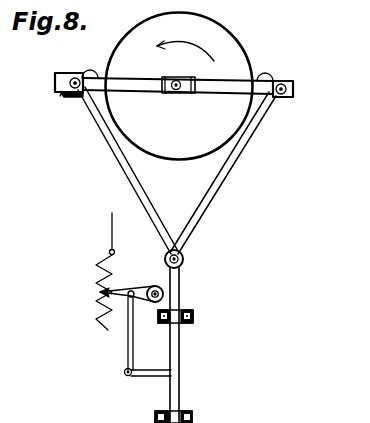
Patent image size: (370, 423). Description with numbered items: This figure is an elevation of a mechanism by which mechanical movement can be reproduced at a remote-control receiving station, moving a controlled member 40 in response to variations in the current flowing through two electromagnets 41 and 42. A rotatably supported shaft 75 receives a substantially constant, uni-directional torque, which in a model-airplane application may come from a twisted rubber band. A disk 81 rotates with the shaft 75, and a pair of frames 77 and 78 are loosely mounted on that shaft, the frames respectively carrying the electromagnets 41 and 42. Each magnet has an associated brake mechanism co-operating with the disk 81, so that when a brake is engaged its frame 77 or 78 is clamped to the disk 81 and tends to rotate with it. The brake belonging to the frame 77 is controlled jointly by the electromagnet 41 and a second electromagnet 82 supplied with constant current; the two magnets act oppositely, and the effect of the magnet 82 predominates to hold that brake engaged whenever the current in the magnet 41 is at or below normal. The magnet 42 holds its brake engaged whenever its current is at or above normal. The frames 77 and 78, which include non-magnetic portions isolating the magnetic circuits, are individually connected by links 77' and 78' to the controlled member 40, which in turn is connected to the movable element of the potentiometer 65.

The controlled member 40 is at (181, 297).
The electromagnet 41 is at (90, 69).
The electromagnet 42 is at (270, 77).
The potentiometer 65 is at (94, 305).
The shaft 75 is at (177, 93).
The frame 77 is at (45, 106).
The link 77' is at (128, 170).
The frame 78 is at (304, 89).
The link 78' is at (237, 173).
The disk 81 is at (243, 53).
The electromagnet 82 is at (66, 76).